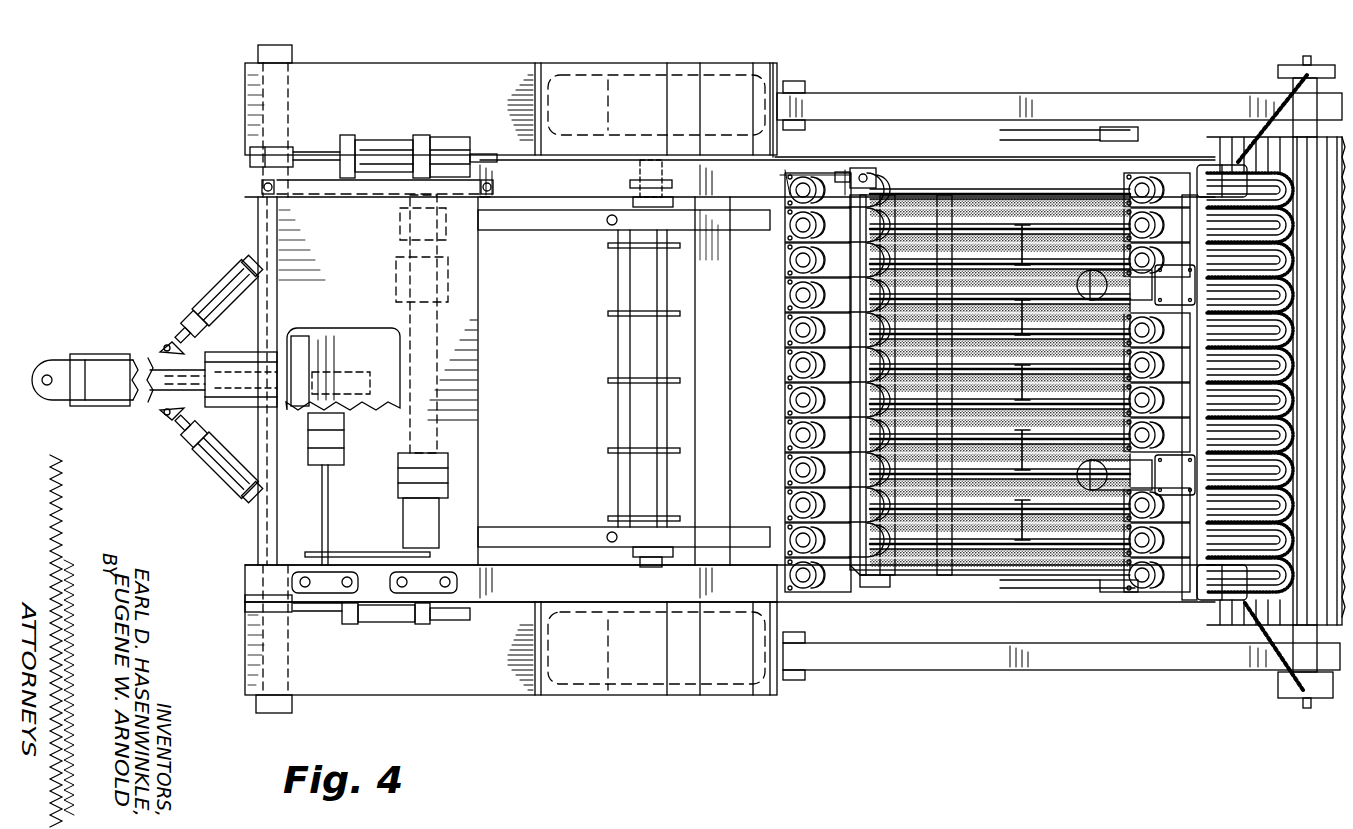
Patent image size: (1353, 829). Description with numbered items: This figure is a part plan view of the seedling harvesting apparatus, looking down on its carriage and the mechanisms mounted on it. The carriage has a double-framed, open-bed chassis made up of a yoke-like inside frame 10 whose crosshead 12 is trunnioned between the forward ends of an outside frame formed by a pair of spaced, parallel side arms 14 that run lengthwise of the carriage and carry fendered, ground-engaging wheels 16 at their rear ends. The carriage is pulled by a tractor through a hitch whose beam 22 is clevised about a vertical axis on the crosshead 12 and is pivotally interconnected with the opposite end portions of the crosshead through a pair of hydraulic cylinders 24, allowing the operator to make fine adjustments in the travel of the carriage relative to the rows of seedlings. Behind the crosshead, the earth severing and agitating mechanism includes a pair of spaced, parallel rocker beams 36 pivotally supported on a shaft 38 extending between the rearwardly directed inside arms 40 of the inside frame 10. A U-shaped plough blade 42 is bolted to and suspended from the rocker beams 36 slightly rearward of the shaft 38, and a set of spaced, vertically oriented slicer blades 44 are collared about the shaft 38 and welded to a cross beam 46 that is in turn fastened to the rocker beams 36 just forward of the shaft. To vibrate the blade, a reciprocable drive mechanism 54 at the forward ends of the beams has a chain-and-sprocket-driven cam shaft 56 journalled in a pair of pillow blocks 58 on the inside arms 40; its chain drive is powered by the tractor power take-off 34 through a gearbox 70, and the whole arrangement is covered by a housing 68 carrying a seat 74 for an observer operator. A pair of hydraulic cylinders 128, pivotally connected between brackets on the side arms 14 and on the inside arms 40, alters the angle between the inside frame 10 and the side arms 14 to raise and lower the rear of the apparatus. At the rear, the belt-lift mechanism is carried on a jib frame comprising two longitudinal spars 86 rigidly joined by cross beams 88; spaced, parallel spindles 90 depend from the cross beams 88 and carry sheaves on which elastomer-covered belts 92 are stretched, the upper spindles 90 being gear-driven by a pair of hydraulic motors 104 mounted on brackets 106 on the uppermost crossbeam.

The inside frame 10 is at (527, 566).
The crosshead 12 is at (268, 520).
The side arms 14 is at (418, 71).
The ground-engaging wheels 16 is at (603, 78).
The hitch beam 22 is at (143, 405).
The hydraulic cylinders 24 is at (210, 295).
The power take-off 34 is at (171, 350).
The rocker beams 36 is at (573, 220).
The shaft 38 is at (666, 283).
The inside arms 40 is at (542, 200).
The plough blade 42 is at (718, 382).
The slicer blades 44 is at (612, 378).
The cross beam 46 is at (613, 398).
The reciprocable drive mechanism 54 is at (400, 530).
The cam shaft 56 is at (438, 517).
The pillow blocks 58 is at (475, 597).
The housing 68 is at (257, 354).
The gearbox 70 is at (348, 362).
The seat 74 is at (348, 361).
The spars 86 is at (980, 164).
The cross beams 88 is at (838, 177).
The spindles 90 is at (1228, 230).
The belts 92 is at (1218, 187).
The hydraulic motors 104 is at (1136, 380).
The brackets 106 is at (1232, 263).
The hydraulic cylinders 128 is at (387, 150).